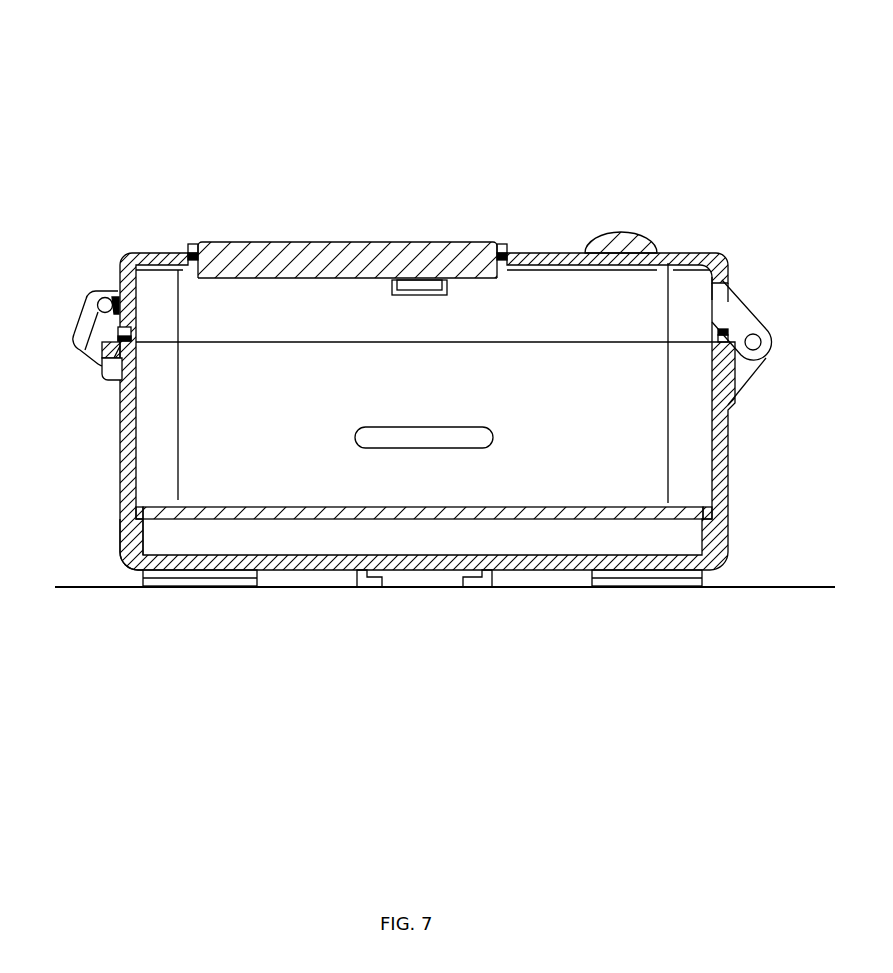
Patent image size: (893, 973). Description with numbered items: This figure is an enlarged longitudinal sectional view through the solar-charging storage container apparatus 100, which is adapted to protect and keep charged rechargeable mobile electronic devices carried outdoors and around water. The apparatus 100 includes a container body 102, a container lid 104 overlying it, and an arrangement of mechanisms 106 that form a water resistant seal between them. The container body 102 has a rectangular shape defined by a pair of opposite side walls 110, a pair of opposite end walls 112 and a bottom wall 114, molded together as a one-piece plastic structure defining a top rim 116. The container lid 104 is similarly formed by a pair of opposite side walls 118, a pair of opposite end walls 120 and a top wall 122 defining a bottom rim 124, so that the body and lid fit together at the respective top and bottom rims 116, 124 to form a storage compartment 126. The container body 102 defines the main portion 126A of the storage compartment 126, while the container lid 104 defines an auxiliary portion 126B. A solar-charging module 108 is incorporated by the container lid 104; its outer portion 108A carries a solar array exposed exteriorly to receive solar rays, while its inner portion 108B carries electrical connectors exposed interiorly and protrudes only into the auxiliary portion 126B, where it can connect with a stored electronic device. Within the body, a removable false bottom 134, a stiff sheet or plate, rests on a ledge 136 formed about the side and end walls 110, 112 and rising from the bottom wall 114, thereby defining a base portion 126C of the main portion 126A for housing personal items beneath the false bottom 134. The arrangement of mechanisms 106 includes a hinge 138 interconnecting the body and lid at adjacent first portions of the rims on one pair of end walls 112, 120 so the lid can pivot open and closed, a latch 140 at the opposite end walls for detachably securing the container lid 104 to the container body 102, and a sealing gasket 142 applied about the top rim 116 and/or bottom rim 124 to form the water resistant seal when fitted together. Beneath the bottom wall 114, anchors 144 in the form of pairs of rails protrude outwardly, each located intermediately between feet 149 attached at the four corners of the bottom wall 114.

The solar-charging storage container apparatus 100 is at (140, 78).
The container body 102 is at (737, 500).
The container lid 104 is at (688, 247).
The arrangement of mechanisms 106 is at (752, 297).
The solar-charging module 108 is at (486, 228).
The outer portion of the module 108A is at (225, 243).
The inner portion of the module 108B is at (235, 280).
The side walls 110 is at (288, 372).
The end walls 112 is at (158, 452).
The bottom wall 114 is at (540, 571).
The top rim 116 is at (138, 347).
The side walls 118 is at (538, 287).
The end walls 120 is at (140, 286).
The top wall 122 is at (512, 262).
The bottom rim 124 is at (140, 338).
The storage compartment 126 is at (148, 482).
The main portion of the storage compartment 126A is at (276, 478).
The auxiliary portion of the storage compartment 126B is at (441, 333).
The base portion of the storage compartment 126C is at (451, 546).
The removable false bottom 134 is at (515, 506).
The ledge 136 is at (147, 545).
The hinge 138 is at (766, 360).
The latch 140 is at (106, 378).
The sealing gasket 142 is at (712, 333).
The anchors 144 is at (258, 580).
The feet 149 is at (198, 588).